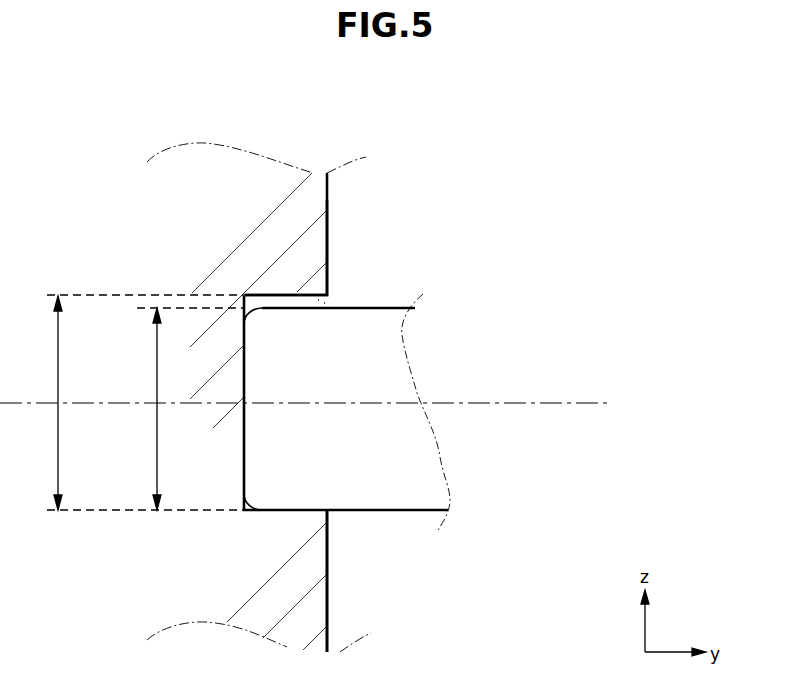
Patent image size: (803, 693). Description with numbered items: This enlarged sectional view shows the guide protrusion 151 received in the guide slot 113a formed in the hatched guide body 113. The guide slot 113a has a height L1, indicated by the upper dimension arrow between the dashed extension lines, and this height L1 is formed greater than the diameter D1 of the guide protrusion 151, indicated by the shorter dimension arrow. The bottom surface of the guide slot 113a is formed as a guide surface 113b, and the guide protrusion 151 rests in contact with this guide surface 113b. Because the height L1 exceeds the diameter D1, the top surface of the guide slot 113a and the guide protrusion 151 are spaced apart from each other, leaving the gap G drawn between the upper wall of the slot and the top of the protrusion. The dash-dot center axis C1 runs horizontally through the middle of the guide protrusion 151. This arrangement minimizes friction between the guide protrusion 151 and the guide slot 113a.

The guide body 113 is at (275, 190).
The guide slot 113a is at (285, 293).
The guide surface 113b is at (313, 512).
The guide protrusion 151 is at (417, 474).
The gap G is at (326, 297).
The center axis C1 is at (597, 402).
The height of guide slot L1 is at (58, 358).
The diameter of guide protrusion D1 is at (155, 437).